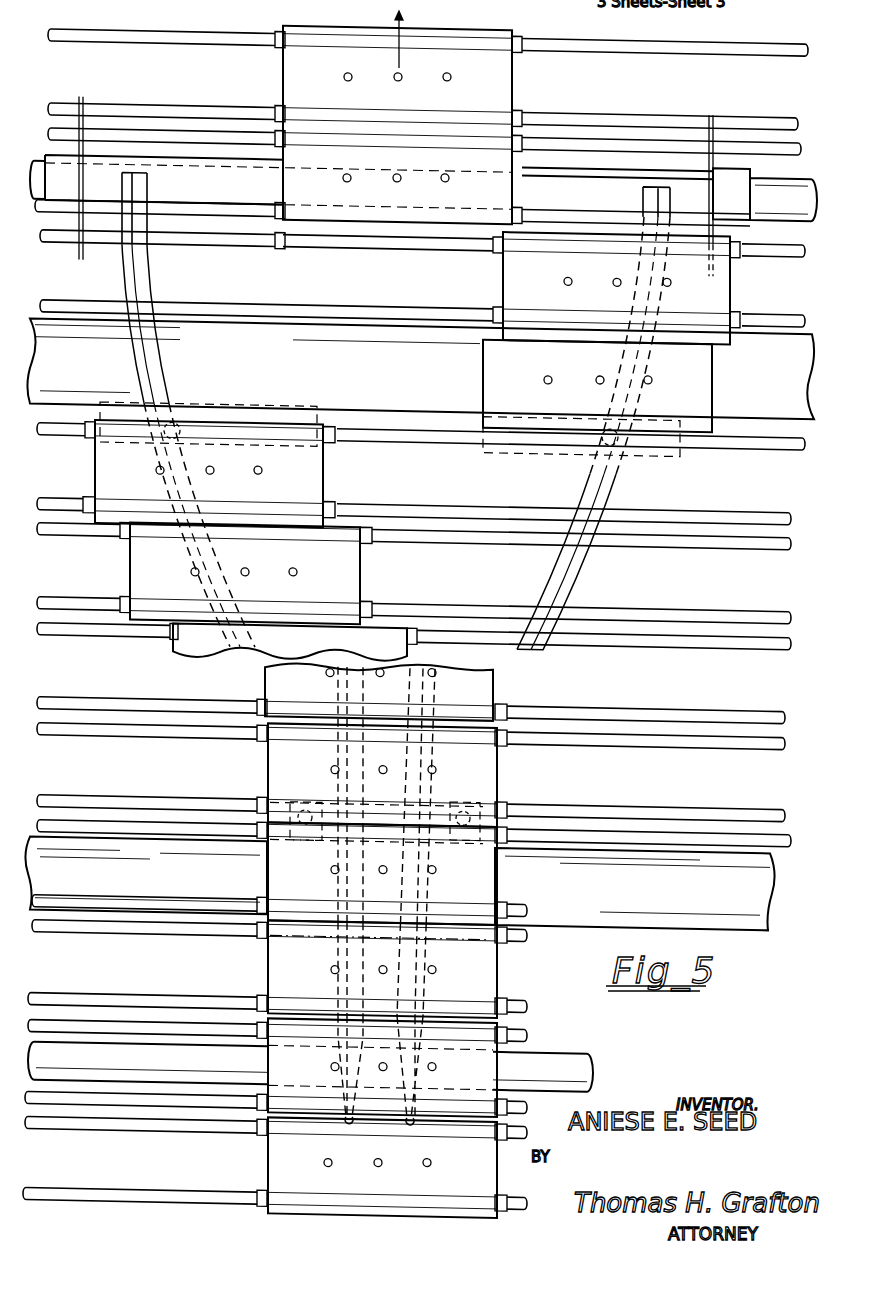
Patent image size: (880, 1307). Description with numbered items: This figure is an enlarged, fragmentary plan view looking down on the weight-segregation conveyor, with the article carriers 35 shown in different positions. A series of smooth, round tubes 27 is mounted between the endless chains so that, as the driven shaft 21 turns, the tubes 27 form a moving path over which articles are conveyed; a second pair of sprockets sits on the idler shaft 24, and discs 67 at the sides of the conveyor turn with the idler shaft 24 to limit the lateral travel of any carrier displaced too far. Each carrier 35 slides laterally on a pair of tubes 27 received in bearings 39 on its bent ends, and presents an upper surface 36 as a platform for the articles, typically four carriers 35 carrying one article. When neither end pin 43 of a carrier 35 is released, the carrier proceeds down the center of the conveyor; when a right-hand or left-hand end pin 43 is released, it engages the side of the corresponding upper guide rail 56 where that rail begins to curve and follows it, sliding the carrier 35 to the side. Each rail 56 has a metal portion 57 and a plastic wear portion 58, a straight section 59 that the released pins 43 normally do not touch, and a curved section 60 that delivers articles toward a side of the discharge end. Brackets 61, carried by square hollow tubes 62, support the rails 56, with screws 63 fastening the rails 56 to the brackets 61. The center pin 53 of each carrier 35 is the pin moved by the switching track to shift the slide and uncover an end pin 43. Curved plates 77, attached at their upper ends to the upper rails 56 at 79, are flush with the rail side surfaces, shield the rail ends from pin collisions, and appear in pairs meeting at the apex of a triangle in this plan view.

The shaft 21 is at (562, 1019).
The idler shaft 24 is at (798, 162).
The tubes 27 is at (184, 99).
The article carriers 35 is at (299, 15).
The upper surface 36 is at (278, 619).
The bearings 39 is at (272, 52).
The end pins 43 is at (345, 73).
The center pin 53 is at (396, 65).
The upper guide rails 56 is at (122, 269).
The metal portion 57 is at (168, 372).
The plastic wear portion 58 is at (137, 367).
The straight section 59 is at (353, 974).
The curved section 60 is at (146, 287).
The brackets 61 is at (486, 442).
The square hollow tubes 62 is at (419, 543).
The screws 63 is at (181, 434).
The discs 67 is at (82, 98).
The curved plates 77 is at (406, 1114).
The upper-end attachment point 79 is at (345, 1050).